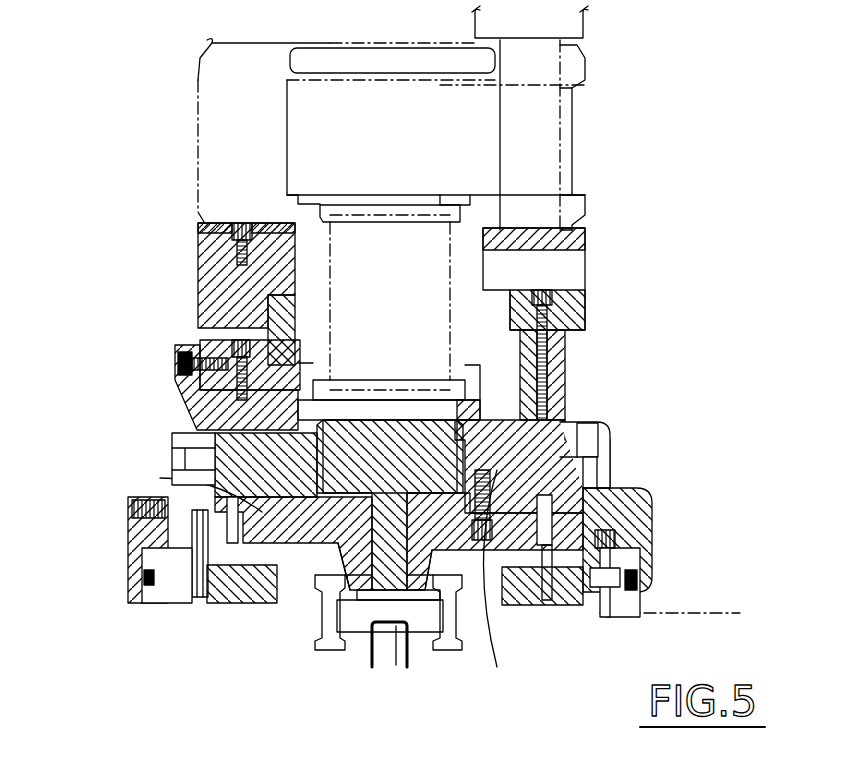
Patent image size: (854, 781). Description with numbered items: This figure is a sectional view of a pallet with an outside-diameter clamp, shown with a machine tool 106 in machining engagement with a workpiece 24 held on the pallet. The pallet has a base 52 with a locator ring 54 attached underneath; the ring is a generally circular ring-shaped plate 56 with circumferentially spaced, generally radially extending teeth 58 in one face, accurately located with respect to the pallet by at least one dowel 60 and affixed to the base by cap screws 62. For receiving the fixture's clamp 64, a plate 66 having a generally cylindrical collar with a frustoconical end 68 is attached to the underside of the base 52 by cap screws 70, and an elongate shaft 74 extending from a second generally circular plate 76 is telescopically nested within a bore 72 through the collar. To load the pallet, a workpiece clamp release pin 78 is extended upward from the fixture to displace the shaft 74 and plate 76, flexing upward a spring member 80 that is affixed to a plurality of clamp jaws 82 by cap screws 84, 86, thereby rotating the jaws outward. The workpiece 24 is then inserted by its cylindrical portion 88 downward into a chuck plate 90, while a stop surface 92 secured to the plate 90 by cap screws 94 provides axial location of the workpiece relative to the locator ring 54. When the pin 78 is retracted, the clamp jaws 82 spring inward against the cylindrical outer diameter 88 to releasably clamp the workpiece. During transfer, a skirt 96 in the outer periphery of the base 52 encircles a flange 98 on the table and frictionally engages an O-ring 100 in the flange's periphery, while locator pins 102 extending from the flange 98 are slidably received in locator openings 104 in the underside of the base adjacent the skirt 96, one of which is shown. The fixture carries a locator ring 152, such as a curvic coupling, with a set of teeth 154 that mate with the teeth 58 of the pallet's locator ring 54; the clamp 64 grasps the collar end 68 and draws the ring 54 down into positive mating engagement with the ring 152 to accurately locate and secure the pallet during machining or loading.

The workpiece 24 is at (198, 86).
The machine tool 106 is at (690, 44).
The cylindrical portion 88 is at (298, 300).
The chuck plate 90 is at (200, 270).
The stop surface 92 is at (586, 232).
The cap screws 94 is at (243, 222).
The flange 98 is at (212, 228).
The clamp jaws 82 is at (200, 352).
The cap screw 84 is at (180, 362).
The cap screw 86 is at (250, 372).
The spring member 80 is at (196, 402).
The shaft 74 is at (396, 528).
The second generally circular plate 76 is at (364, 502).
The ring-shaped plate 56 is at (562, 400).
The cap screws 62 is at (578, 445).
The locator ring 54 is at (612, 486).
The base 52 is at (624, 487).
The dowel 60 is at (172, 452).
The teeth 58 is at (628, 522).
The locator openings 104 is at (620, 548).
The skirt 96 is at (640, 577).
The O-ring 100 is at (148, 590).
The locator pins 102 is at (604, 618).
The teeth 154 is at (197, 604).
The locator ring 152 is at (242, 606).
The cap screws 70 is at (492, 603).
The plate 66 is at (280, 610).
The clamp 64 is at (320, 645).
The frustoconical end 68 is at (372, 633).
The workpiece clamp release pin 78 is at (386, 680).
The bore 72 is at (357, 612).